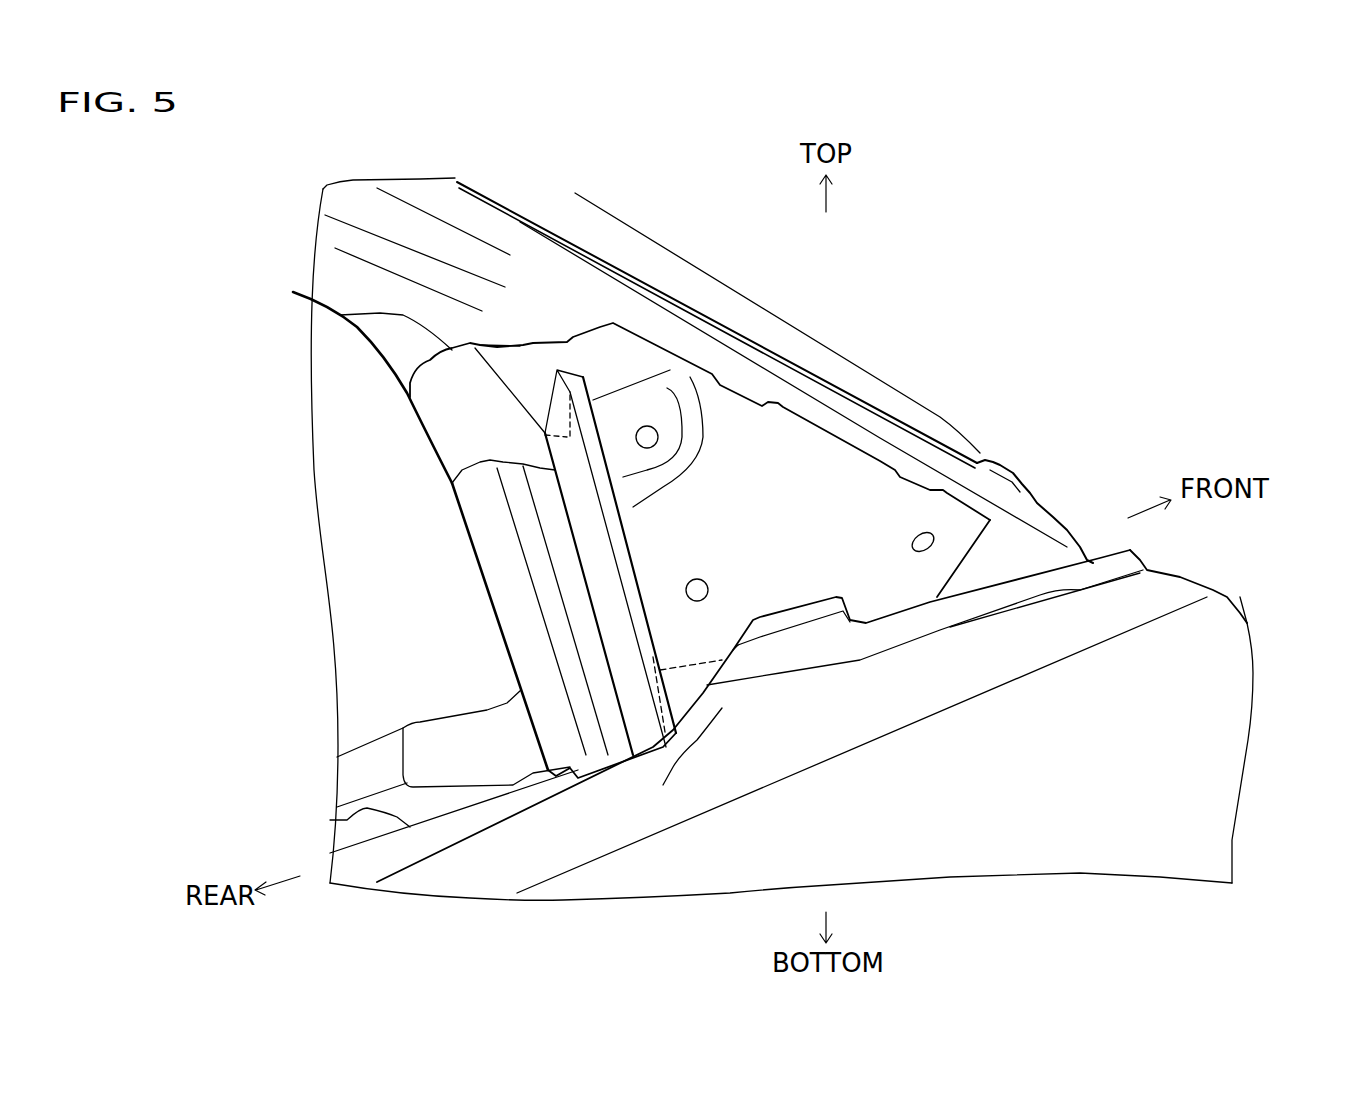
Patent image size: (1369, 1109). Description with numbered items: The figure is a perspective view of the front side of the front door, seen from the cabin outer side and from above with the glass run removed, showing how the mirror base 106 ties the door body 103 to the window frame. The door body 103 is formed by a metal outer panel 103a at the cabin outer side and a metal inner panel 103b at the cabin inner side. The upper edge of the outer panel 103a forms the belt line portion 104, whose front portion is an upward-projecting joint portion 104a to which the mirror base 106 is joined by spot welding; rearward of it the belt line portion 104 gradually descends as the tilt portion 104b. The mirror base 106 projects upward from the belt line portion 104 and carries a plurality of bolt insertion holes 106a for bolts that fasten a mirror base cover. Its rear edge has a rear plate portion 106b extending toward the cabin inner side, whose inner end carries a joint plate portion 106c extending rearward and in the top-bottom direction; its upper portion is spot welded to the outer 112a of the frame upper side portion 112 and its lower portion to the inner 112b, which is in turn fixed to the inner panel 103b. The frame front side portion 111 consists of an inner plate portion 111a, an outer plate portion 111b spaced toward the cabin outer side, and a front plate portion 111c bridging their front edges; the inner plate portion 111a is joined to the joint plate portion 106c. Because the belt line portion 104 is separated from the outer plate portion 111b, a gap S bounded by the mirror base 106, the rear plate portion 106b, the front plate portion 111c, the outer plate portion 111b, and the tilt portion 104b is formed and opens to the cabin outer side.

The door body 103 is at (1159, 562).
The outer panel 103a is at (1200, 647).
The inner panel 103b is at (383, 763).
The belt line portion 104 is at (340, 827).
The joint portion 104a is at (783, 620).
The tilt portion 104b is at (712, 700).
The mirror base 106 is at (625, 321).
The bolt insertion holes 106a is at (655, 425).
The rear plate portion 106b is at (497, 346).
The joint plate portion 106c is at (340, 315).
The frame front side portion 111 is at (478, 467).
The inner plate portion 111a is at (455, 481).
The outer plate portion 111b is at (640, 723).
The front plate portion 111c is at (565, 372).
The frame upper side portion 112 is at (848, 393).
The outer 112a is at (337, 283).
The inner 112b is at (453, 748).
The gap S is at (675, 693).